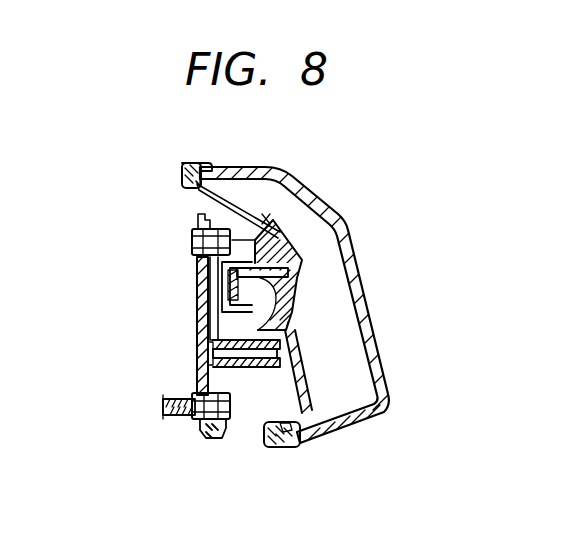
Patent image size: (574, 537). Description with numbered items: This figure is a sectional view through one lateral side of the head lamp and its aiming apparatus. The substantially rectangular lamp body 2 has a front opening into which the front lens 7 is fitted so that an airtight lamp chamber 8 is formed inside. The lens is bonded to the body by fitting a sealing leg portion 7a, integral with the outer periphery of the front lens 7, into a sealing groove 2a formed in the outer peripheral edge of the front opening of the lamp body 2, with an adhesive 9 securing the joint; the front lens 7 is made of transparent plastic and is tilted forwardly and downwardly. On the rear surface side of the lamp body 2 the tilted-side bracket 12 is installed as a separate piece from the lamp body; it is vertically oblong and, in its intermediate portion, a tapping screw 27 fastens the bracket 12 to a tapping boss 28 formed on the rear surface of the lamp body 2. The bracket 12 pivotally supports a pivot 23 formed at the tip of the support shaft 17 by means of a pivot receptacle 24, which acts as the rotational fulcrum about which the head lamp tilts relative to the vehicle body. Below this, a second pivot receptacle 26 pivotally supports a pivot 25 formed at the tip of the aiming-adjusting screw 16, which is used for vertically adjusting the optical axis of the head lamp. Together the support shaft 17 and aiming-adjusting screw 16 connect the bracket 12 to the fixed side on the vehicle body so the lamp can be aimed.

The lamp body 2 is at (246, 180).
The sealing groove 2a is at (183, 173).
The front lens 7 is at (336, 222).
The sealing leg portion 7a is at (192, 165).
The lamp chamber 8 is at (318, 266).
The adhesive 9 is at (186, 184).
The tilted-side bracket 12 is at (197, 300).
The aiming-adjusting screw 16 is at (160, 406).
The support shaft 17 is at (192, 238).
The pivot 23 is at (192, 250).
The pivot receptacle 24 is at (266, 220).
The pivot 25 is at (196, 418).
The pivot receptacle 26 is at (222, 440).
The tapping screw 27 is at (200, 352).
The tapping boss 28 is at (206, 328).